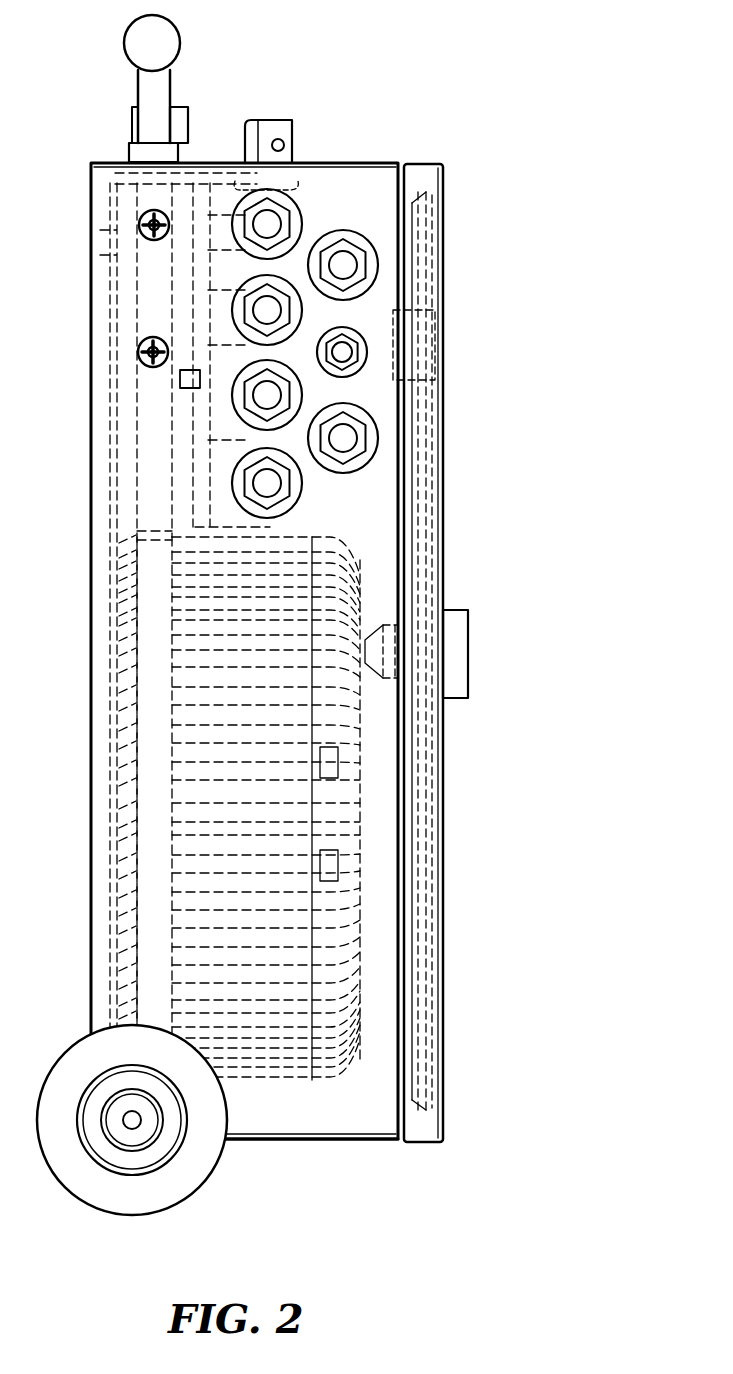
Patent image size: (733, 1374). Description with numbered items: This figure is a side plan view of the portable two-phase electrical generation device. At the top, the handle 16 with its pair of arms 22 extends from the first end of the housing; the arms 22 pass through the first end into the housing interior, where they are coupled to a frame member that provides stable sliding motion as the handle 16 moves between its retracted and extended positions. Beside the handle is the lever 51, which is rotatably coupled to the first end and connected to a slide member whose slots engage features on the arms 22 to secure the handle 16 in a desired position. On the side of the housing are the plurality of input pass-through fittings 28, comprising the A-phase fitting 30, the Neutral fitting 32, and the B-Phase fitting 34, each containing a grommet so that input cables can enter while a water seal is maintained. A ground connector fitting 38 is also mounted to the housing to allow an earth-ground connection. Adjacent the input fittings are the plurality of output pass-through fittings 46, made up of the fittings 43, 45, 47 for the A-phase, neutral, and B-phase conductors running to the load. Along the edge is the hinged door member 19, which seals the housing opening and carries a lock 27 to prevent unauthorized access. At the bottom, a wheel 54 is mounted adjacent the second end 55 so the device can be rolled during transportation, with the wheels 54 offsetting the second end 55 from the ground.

The handle 16 is at (125, 43).
The arms 22 is at (135, 98).
The lever 51 is at (278, 120).
The output pass-through fitting 47 is at (300, 200).
The output pass-through fittings 46 is at (350, 192).
The output pass-through fitting 45 is at (380, 257).
The output pass-through fitting 43 is at (230, 287).
The ground connector fitting 38 is at (368, 352).
The B-Phase fitting 34 is at (232, 395).
The Neutral fitting 32 is at (380, 440).
The A-phase fitting 30 is at (300, 510).
The input pass-through fittings 28 is at (460, 528).
The lock 27 is at (470, 676).
The door member 19 is at (445, 828).
The wheels 54 is at (190, 1197).
The second end 55 is at (355, 1145).